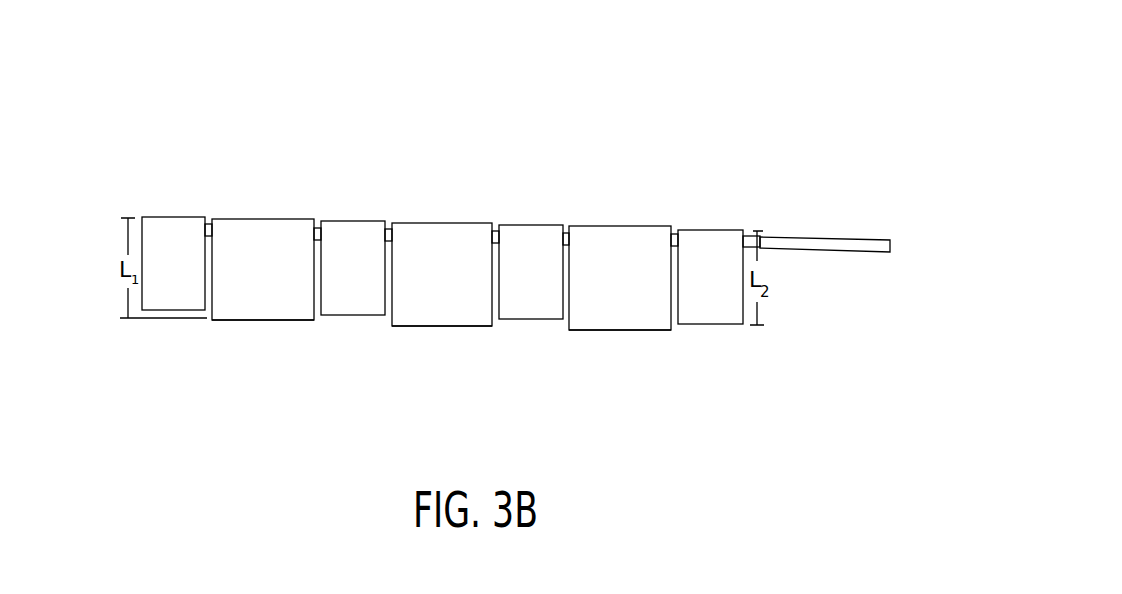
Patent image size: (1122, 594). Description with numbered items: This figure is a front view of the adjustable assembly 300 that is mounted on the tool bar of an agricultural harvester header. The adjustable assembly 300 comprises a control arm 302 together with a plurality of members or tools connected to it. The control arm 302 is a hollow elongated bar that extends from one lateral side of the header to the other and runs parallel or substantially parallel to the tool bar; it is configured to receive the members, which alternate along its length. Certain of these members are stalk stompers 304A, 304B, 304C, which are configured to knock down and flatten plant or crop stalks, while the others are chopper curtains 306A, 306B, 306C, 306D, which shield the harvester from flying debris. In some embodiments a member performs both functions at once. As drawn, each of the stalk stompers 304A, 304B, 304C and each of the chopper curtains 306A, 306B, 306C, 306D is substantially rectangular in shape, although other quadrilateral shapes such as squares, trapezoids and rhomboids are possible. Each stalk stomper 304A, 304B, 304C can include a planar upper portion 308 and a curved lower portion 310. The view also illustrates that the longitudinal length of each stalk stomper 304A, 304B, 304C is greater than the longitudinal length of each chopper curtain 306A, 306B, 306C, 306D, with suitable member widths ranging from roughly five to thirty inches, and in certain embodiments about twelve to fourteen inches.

The adjustable assembly 300 is at (846, 131).
The control arm 302 is at (863, 227).
The stalk stomper 304A is at (277, 246).
The stalk stomper 304B is at (447, 252).
The stalk stomper 304C is at (627, 252).
The chopper curtain 306A is at (168, 209).
The chopper curtain 306B is at (339, 327).
The chopper curtain 306C is at (523, 332).
The chopper curtain 306D is at (708, 335).
The planar upper portion 308 is at (254, 206).
The curved lower portion 310 is at (259, 331).